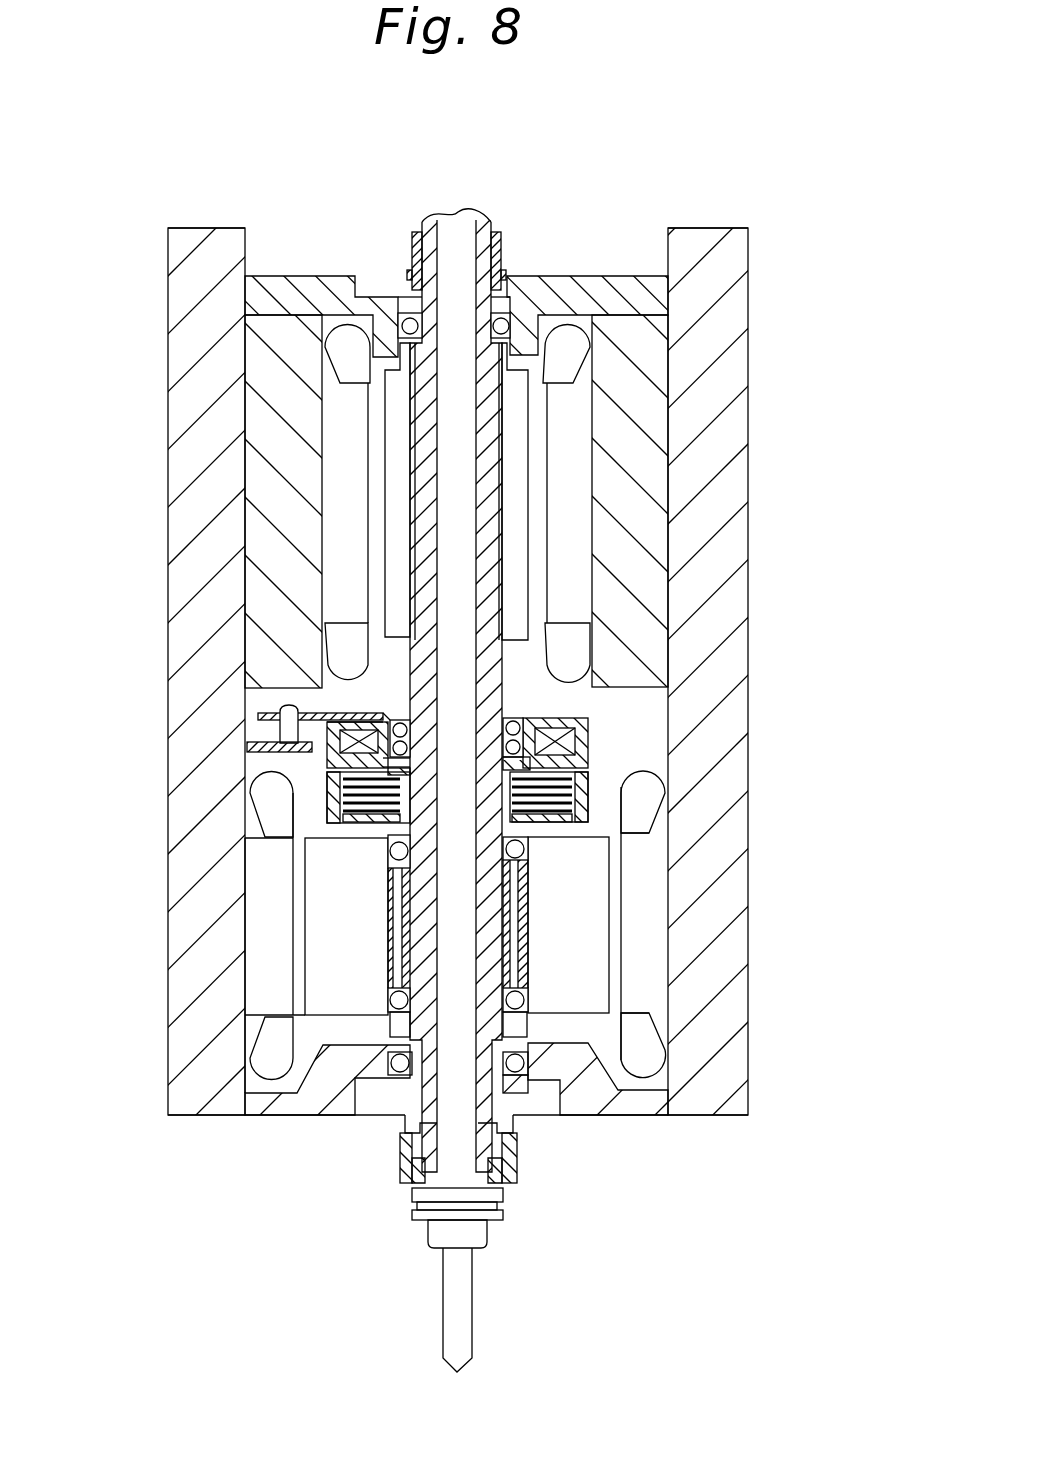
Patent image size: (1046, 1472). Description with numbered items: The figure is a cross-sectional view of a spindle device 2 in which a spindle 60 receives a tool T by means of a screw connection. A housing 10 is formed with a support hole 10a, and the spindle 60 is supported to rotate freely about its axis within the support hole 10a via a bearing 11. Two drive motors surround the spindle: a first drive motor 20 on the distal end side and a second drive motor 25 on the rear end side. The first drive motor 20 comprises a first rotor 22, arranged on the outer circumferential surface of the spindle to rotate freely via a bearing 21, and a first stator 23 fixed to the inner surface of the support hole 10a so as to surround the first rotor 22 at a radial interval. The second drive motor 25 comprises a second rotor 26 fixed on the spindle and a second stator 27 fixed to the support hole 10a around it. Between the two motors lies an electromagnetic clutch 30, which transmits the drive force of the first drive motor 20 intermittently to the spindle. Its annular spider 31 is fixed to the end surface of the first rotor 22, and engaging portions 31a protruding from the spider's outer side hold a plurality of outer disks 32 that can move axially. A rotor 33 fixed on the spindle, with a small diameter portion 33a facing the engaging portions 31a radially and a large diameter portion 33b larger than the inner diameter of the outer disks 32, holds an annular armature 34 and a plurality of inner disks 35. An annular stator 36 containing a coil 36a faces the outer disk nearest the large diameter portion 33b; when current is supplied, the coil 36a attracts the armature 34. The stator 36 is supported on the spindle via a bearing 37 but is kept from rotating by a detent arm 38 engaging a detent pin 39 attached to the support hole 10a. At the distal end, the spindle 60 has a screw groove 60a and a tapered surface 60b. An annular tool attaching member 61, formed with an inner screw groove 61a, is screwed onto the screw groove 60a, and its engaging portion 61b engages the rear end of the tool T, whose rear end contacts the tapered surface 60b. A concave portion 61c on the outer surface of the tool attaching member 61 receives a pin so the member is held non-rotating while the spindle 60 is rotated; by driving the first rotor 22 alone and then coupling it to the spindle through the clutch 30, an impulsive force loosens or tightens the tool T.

The spindle device 2 is at (186, 173).
The housing 10 is at (180, 990).
The support hole 10a is at (262, 950).
The bearing 11 is at (510, 318).
The first drive motor 20 is at (684, 938).
The bearing 21 is at (396, 860).
The first rotor 22 is at (322, 1090).
The first stator 23 is at (258, 1003).
The second drive motor 25 is at (640, 487).
The second rotor 26 is at (395, 410).
The second stator 27 is at (330, 435).
The electromagnetic clutch 30 is at (330, 706).
The spider 31 is at (565, 828).
The engaging portions 31a is at (338, 795).
The outer disks 32 is at (578, 752).
The rotor 33 is at (687, 676).
The small diameter portion 33a is at (505, 718).
The large diameter portion 33b is at (532, 735).
The armature 34 is at (530, 825).
The inner disks 35 is at (345, 825).
The stator 36 is at (578, 742).
The coil 36a is at (590, 760).
The bearing 37 is at (400, 720).
The detent arm 38 is at (300, 715).
The detent pin 39 is at (283, 730).
The spindle 60 is at (538, 1174).
The screw groove 60a is at (508, 1160).
The tapered surface 60b is at (505, 1200).
The tool attaching member 61 is at (400, 1188).
The screw groove 61a is at (410, 1162).
The engaging portion 61b is at (493, 1205).
The concave portion 61c is at (504, 1196).
The tool T is at (440, 1230).